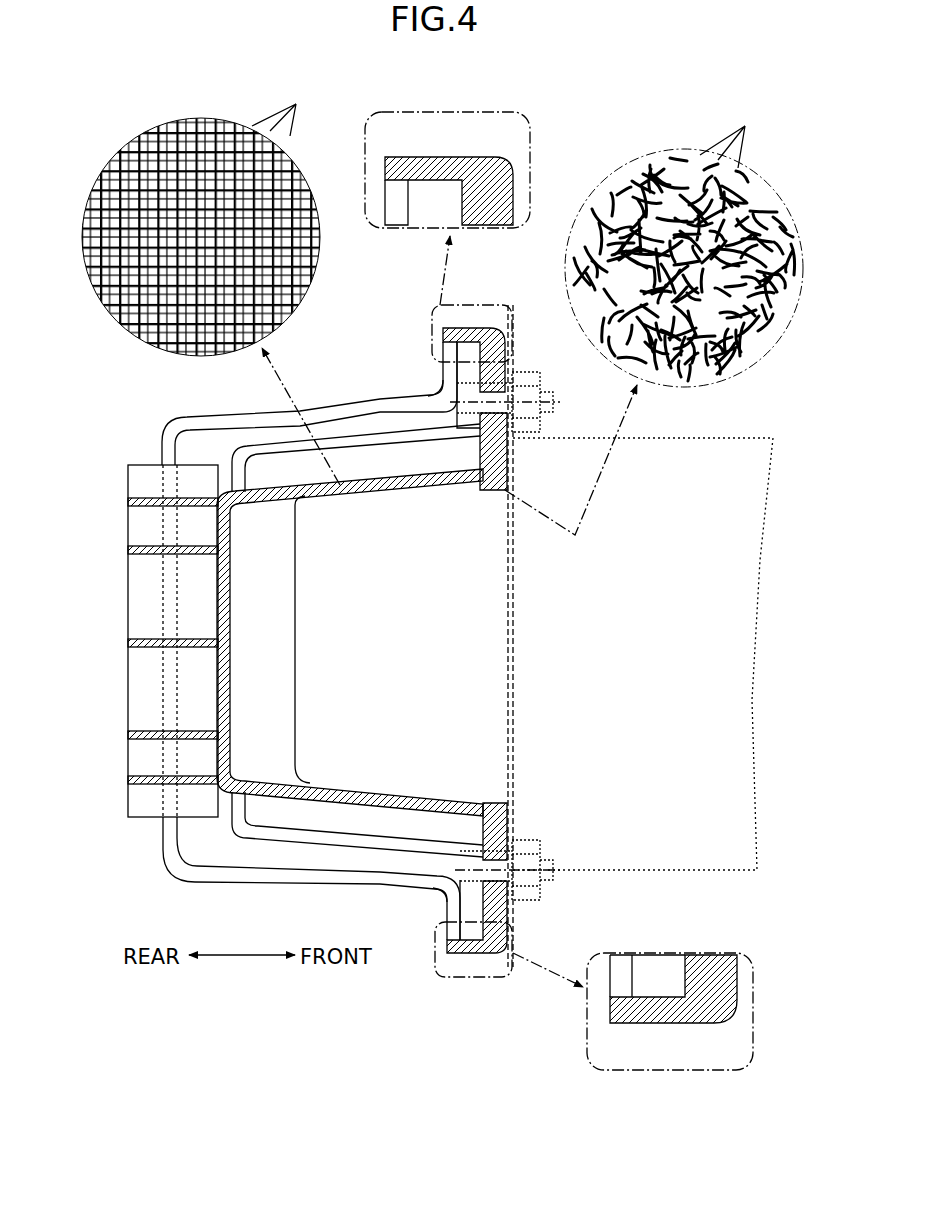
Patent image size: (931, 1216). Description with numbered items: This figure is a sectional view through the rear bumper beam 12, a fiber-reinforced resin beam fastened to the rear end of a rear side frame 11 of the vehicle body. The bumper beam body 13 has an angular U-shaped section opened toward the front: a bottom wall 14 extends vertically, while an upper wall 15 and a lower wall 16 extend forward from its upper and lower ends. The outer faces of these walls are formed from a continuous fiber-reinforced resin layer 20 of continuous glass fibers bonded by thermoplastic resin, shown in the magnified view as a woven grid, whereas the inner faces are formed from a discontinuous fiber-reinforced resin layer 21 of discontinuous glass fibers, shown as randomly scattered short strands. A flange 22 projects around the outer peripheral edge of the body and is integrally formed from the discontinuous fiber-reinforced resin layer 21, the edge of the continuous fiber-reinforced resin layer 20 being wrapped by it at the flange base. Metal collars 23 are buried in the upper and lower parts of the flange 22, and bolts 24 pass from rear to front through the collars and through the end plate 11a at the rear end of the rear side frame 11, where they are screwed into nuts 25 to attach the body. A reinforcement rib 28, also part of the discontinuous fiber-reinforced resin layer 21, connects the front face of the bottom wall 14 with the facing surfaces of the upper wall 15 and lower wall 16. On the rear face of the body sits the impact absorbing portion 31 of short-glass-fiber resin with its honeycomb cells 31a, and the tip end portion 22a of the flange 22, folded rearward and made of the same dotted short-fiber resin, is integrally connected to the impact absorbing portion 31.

The rear side frame 11 is at (693, 874).
The end plate 11a is at (513, 648).
The rear bumper beam 12 is at (178, 410).
The bumper beam body 13 is at (460, 495).
The bottom wall 14 is at (350, 642).
The upper wall 15 is at (350, 642).
The lower wall 16 is at (418, 563).
The continuous fiber-reinforced resin layer 20 is at (250, 128).
The discontinuous fiber-reinforced resin layer 21 is at (640, 195).
The flange 22 is at (591, 591).
The tip end portion 22a is at (440, 158).
The metal collar 23 is at (500, 420).
The bolt 24 is at (433, 391).
The nut 25 is at (528, 373).
The reinforcement rib 28 is at (285, 713).
The impact absorbing portion 31 is at (145, 641).
The honeycomb cell 31a is at (143, 693).